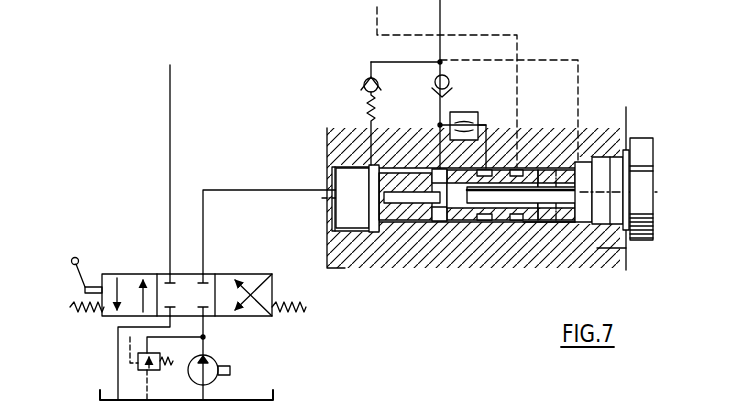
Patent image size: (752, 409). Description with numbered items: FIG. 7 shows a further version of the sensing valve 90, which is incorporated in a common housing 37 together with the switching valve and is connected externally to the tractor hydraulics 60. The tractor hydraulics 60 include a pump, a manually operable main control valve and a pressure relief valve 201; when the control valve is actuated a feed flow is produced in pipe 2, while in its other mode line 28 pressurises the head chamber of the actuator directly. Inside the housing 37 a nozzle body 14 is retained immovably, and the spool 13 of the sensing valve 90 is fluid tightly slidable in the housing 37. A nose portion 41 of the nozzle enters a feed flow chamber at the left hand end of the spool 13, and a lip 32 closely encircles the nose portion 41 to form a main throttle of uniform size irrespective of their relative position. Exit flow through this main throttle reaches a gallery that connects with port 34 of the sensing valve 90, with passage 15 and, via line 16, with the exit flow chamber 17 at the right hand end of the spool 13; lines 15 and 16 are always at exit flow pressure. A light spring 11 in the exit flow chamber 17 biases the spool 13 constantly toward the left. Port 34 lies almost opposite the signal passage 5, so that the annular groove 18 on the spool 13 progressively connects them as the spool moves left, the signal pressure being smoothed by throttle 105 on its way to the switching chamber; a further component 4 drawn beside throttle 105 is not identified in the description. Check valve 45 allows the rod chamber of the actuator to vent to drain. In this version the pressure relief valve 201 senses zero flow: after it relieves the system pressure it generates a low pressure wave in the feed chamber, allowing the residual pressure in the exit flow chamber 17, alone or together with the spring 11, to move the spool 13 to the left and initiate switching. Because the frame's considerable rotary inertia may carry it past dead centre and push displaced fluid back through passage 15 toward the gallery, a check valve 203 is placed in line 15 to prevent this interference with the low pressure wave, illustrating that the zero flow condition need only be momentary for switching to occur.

The pipe 2 is at (204, 218).
The control line 4 is at (487, 126).
The signal passage 5 is at (377, 19).
The light spring 11 is at (557, 170).
The spool 13 is at (477, 232).
The nozzle body 14 is at (400, 232).
The passage 15 is at (445, 17).
The line 16 is at (580, 73).
The exit flow chamber 17 is at (532, 236).
The annular groove 18 is at (498, 232).
The line 28 is at (170, 137).
The lip 32 is at (428, 168).
The port 34 is at (513, 157).
The housing 37 is at (628, 250).
The nose portion 41 is at (426, 232).
The check valve 45 is at (360, 73).
The tractor hydraulics 60 is at (145, 264).
The sensing valve 90 is at (661, 165).
The throttle 105 is at (463, 112).
The pressure relief valve 201 is at (138, 358).
The check valve 203 is at (446, 73).